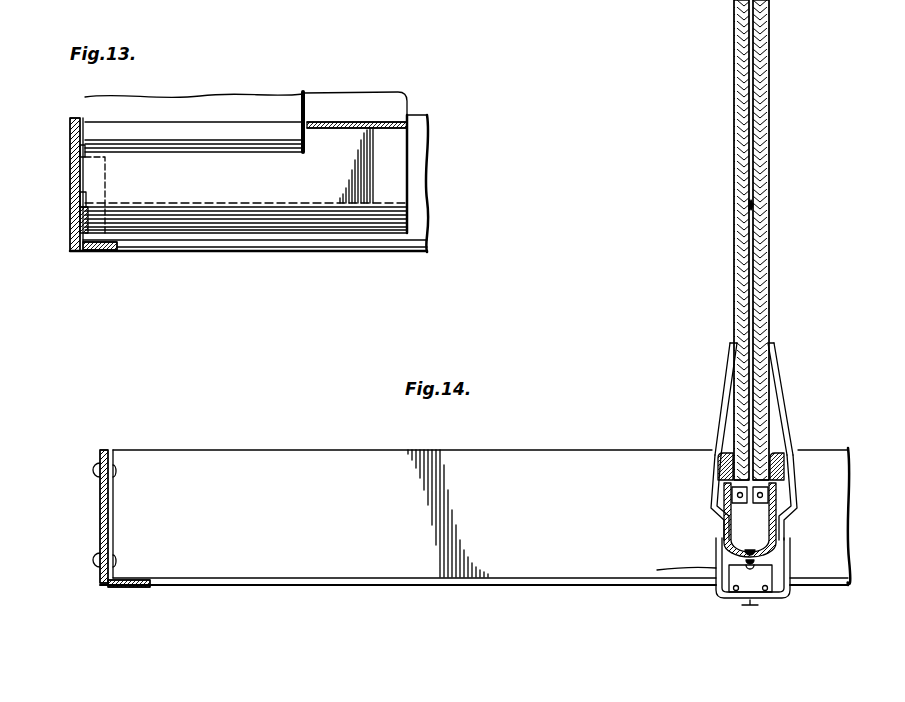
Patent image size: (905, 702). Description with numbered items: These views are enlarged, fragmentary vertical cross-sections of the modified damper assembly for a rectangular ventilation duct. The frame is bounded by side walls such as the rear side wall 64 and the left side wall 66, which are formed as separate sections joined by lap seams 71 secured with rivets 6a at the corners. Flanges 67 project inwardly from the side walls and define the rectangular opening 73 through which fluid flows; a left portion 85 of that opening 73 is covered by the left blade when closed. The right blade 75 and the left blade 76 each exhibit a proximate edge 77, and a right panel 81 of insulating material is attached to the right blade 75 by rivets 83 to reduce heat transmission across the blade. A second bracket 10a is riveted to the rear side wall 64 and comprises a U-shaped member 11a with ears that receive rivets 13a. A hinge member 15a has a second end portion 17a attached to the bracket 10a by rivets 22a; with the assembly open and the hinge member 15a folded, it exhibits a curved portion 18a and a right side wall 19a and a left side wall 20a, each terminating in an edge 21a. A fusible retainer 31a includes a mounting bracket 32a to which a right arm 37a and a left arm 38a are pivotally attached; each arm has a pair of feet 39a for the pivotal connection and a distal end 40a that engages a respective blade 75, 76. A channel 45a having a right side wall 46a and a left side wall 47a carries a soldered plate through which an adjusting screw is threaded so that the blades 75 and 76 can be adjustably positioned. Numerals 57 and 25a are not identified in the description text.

In FIG. 13, the left side wall 66 is at (74, 118).
In FIG. 14, the left side wall 66 is at (100, 515).
In FIG. 13, the top edge 57 is at (221, 96).
In FIG. 13, the right panel 81 is at (385, 92).
In FIG. 13, the edge 21a is at (346, 122).
In FIG. 14, the edge 21a is at (785, 453).
In FIG. 13, the proximate edge 77 is at (225, 152).
In FIG. 13, the second bracket 10a is at (80, 151).
In FIG. 13, the rivets 13a is at (82, 178).
In FIG. 14, the rivets 13a is at (740, 497).
In FIG. 13, the U-shaped member 11a is at (80, 200).
In FIG. 14, the U-shaped member 11a is at (773, 498).
In FIG. 13, the second end portion 17a is at (80, 225).
In FIG. 13, the right side wall 19a is at (275, 190).
In FIG. 14, the right side wall 19a is at (785, 500).
In FIG. 13, the rear side wall 64 is at (427, 188).
In FIG. 14, the rear side wall 64 is at (304, 512).
In FIG. 13, the rectangular opening 73 is at (118, 248).
In FIG. 13, the rivets 22a is at (100, 252).
In FIG. 13, the curved portion 18a is at (262, 247).
In FIG. 14, the curved portion 18a is at (773, 555).
In FIG. 13, the flanges 67 is at (364, 252).
In FIG. 14, the flanges 67 is at (350, 578).
In FIG. 14, the lap seams 71 is at (112, 450).
In FIG. 14, the rivets 6a is at (92, 470).
In FIG. 14, the left portion 85 is at (150, 582).
In FIG. 14, the right blade 75 is at (770, 92).
In FIG. 14, the left blade 76 is at (733, 106).
In FIG. 14, the rivets 83 is at (745, 206).
In FIG. 14, the distal end 40a is at (775, 343).
In FIG. 14, the left arm 38a is at (719, 423).
In FIG. 14, the right arm 37a is at (782, 392).
In FIG. 14, the hinge member 15a is at (722, 520).
In FIG. 14, the left side wall 20a is at (722, 512).
In FIG. 14, the block 25a is at (712, 452).
In FIG. 14, the right side wall 46a is at (786, 546).
In FIG. 14, the left side wall 47a is at (716, 553).
In FIG. 14, the channel 45a is at (666, 569).
In FIG. 14, the mounting bracket 32a is at (708, 570).
In FIG. 14, the fusible retainer 31a is at (710, 594).
In FIG. 14, the feet 39a is at (775, 590).